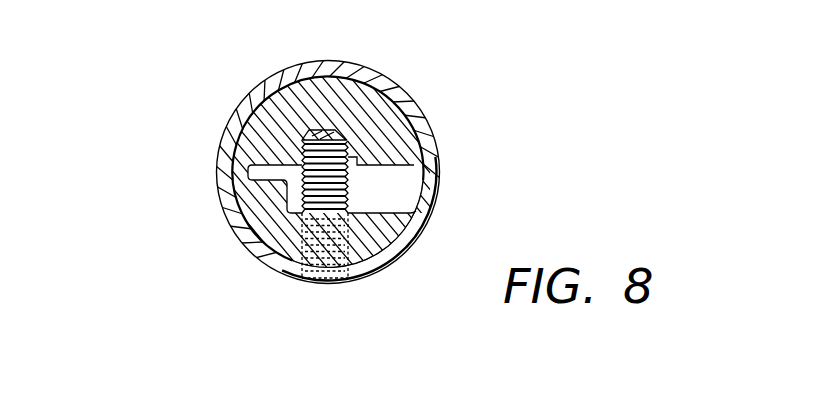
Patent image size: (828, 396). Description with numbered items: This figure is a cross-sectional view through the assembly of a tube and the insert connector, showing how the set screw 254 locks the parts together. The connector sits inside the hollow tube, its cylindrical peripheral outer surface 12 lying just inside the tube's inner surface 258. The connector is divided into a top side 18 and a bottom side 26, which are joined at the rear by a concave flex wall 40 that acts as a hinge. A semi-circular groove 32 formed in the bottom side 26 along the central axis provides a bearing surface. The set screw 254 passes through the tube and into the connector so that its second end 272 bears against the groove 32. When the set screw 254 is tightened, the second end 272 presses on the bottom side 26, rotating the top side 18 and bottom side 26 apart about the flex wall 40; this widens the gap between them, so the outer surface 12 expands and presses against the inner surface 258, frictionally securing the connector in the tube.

The cylindrical peripheral outer surface 12 is at (397, 105).
The top side 18 is at (275, 232).
The bottom side 26 is at (287, 98).
The semi-circular groove 32 is at (374, 163).
The rear concave flex wall 40 is at (250, 172).
The set screw 254 is at (348, 198).
The inner surface of first tube 258 is at (360, 82).
The second end of set screw 272 is at (310, 132).